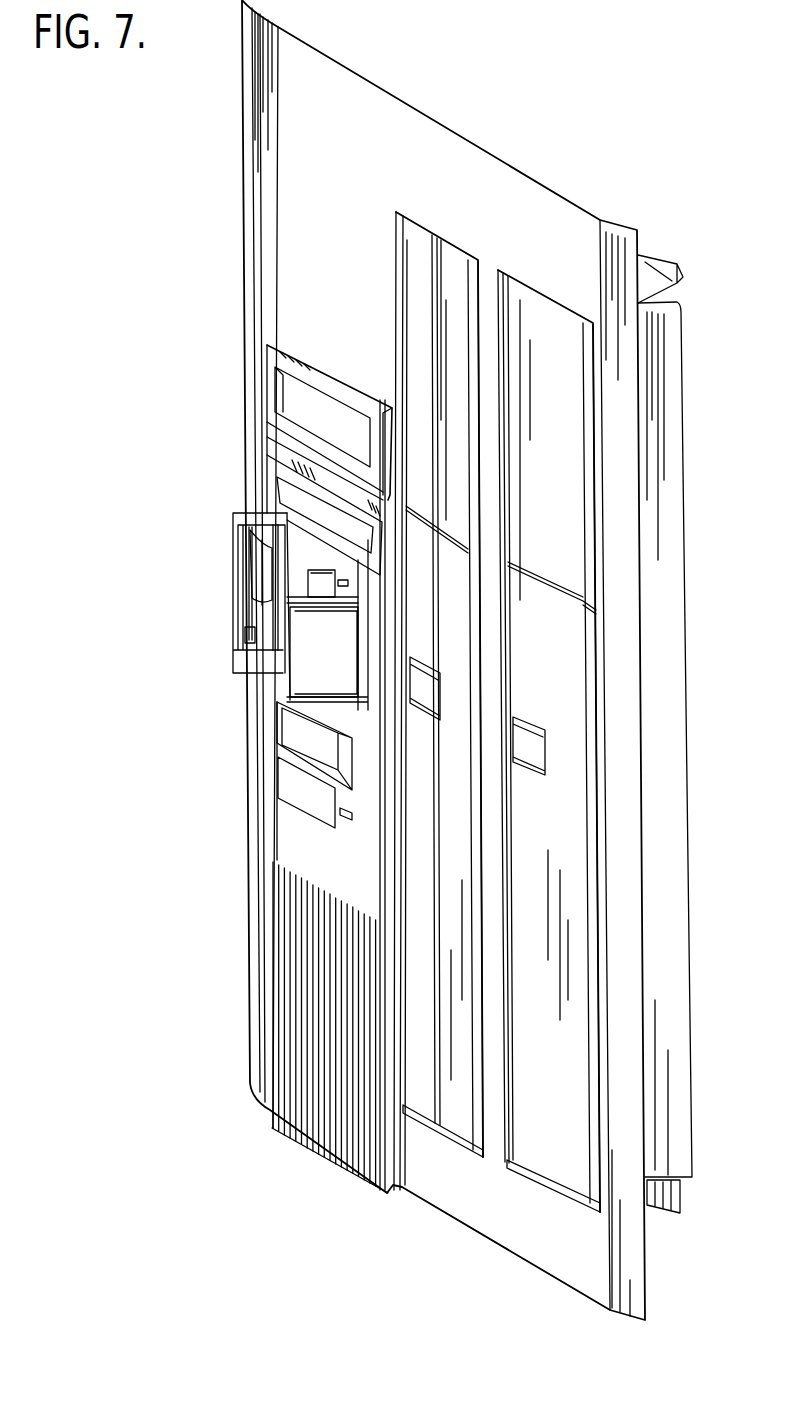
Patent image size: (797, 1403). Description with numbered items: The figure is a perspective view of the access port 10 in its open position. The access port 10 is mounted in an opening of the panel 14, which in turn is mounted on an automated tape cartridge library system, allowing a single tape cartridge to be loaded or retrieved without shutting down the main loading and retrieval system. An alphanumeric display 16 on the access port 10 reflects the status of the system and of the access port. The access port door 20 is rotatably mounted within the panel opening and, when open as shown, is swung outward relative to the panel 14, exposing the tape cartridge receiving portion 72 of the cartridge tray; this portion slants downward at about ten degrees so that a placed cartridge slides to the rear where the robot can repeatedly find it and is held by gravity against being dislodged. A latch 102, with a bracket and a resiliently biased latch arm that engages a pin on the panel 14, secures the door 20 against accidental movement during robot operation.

The panel 14 is at (318, 288).
The alphanumeric display 16 is at (300, 398).
The access port 10 is at (215, 510).
The tape cartridge receiving portion 72 is at (300, 584).
The latch 102 is at (247, 633).
The access port door 20 is at (260, 667).